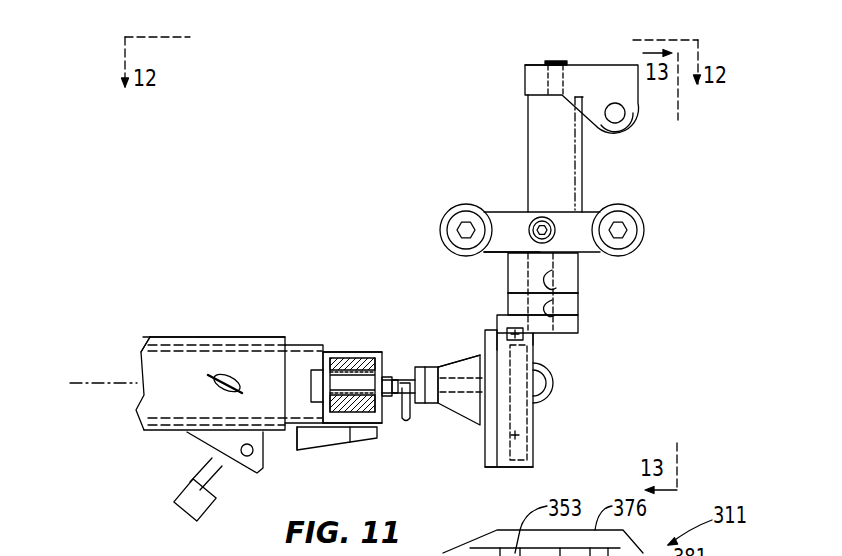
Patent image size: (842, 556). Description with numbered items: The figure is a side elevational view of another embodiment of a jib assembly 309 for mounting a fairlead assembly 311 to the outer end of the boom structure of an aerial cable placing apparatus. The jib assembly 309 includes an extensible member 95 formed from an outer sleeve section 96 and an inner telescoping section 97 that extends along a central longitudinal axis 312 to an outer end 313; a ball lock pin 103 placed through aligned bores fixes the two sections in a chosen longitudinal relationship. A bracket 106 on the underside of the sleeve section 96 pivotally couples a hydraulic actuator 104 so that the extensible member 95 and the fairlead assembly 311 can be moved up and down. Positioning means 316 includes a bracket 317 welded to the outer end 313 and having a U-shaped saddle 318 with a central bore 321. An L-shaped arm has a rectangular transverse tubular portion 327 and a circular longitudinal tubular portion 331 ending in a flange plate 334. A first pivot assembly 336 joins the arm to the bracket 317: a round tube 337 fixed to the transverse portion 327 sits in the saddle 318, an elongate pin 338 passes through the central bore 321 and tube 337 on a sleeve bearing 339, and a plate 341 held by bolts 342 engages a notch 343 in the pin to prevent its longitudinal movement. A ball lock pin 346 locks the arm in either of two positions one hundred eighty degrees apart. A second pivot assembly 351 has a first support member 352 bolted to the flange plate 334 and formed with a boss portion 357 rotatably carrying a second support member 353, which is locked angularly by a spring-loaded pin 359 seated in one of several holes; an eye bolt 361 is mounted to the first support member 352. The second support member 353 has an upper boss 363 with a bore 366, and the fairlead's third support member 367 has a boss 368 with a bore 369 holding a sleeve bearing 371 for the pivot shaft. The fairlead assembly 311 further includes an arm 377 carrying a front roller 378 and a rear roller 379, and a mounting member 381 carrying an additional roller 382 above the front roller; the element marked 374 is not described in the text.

The axially-extending member 95 is at (146, 328).
The outer sleeve section 96 is at (172, 337).
The inner telescoping section 97 is at (300, 350).
The ball lock pin 103 is at (210, 380).
The hydraulic actuator 104 is at (184, 481).
The bracket 106 is at (265, 470).
The jib assembly 309 is at (255, 260).
The fairlead assembly 311 is at (521, 60).
The central longitudinal axis 312 is at (118, 383).
The outer end 313 is at (207, 353).
The positioning means 316 is at (372, 330).
The bracket 317 is at (292, 457).
The U-shaped saddle 318 is at (338, 428).
The central bore 321 is at (344, 350).
The transverse tubular portion 327 is at (365, 350).
The longitudinal tubular portion 331 is at (426, 365).
The flange plate 334 is at (448, 365).
The first pivot assembly 336 is at (391, 344).
The round tube 337 is at (365, 427).
The elongate pin 338 is at (287, 375).
The sleeve bearing 339 is at (352, 428).
The plate 341 is at (388, 426).
The bolts 342 is at (400, 425).
The notch 343 is at (403, 348).
The ball lock pin 346 is at (408, 420).
The second pivot assembly 351 is at (548, 470).
The first support member 352 is at (487, 467).
The second support member 353 is at (533, 430).
The boss portion 357 is at (533, 338).
The eye bolt 361 is at (541, 378).
The spring-loaded pin 359 is at (443, 350).
The boss 363 is at (572, 305).
The bore 366 is at (565, 332).
The third support member 367 is at (460, 258).
The boss 368 is at (510, 283).
The bore 369 is at (560, 282).
The sleeve bearing 371 is at (578, 255).
The tube 374 is at (583, 167).
The second arm 377 is at (598, 207).
The front roller 378 is at (645, 232).
The rear roller 379 is at (443, 215).
The mounting member 381 is at (597, 65).
The additional roller 382 is at (638, 122).